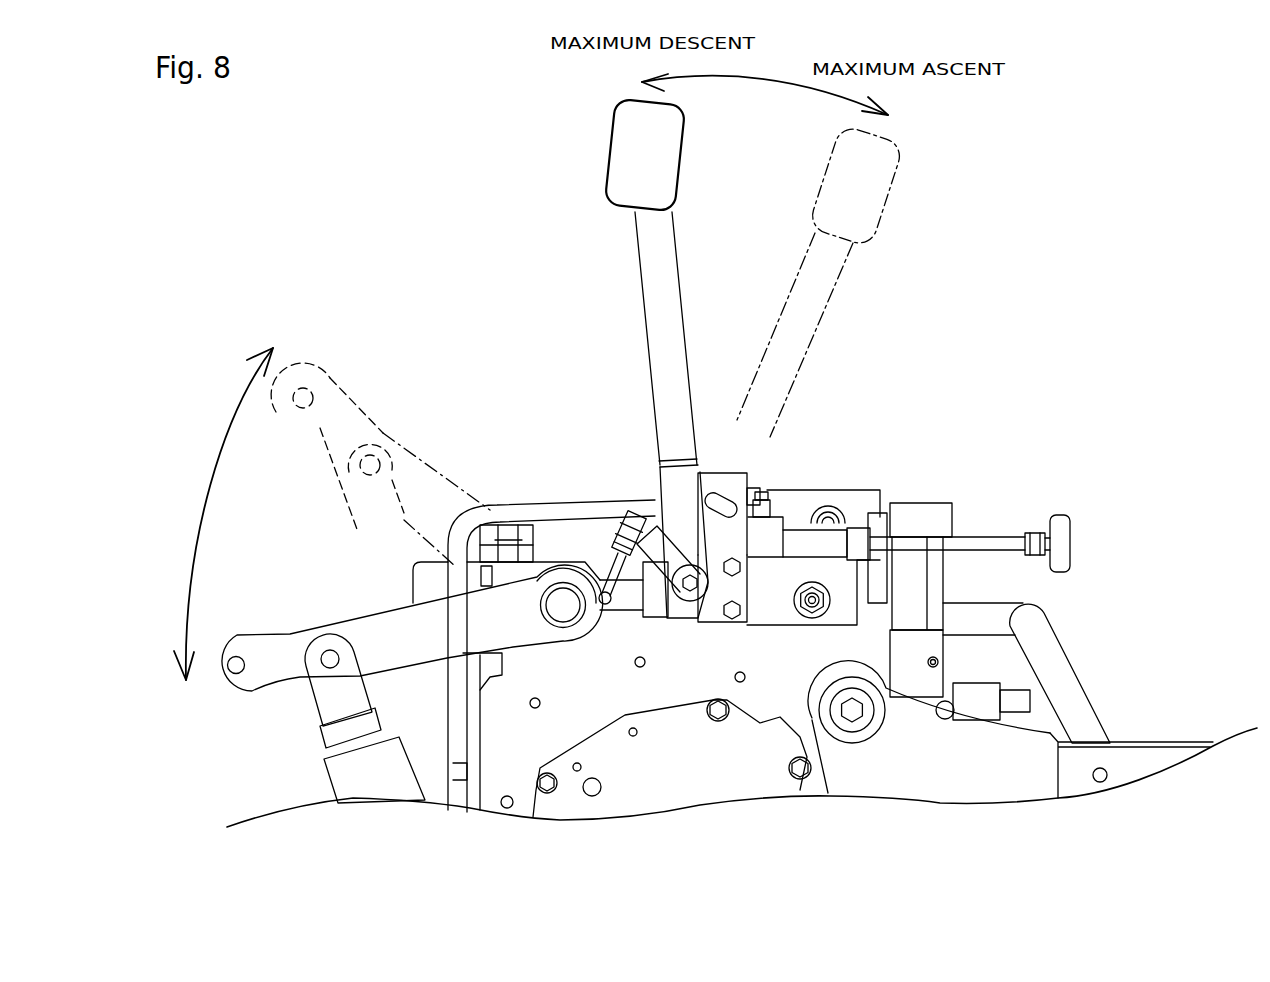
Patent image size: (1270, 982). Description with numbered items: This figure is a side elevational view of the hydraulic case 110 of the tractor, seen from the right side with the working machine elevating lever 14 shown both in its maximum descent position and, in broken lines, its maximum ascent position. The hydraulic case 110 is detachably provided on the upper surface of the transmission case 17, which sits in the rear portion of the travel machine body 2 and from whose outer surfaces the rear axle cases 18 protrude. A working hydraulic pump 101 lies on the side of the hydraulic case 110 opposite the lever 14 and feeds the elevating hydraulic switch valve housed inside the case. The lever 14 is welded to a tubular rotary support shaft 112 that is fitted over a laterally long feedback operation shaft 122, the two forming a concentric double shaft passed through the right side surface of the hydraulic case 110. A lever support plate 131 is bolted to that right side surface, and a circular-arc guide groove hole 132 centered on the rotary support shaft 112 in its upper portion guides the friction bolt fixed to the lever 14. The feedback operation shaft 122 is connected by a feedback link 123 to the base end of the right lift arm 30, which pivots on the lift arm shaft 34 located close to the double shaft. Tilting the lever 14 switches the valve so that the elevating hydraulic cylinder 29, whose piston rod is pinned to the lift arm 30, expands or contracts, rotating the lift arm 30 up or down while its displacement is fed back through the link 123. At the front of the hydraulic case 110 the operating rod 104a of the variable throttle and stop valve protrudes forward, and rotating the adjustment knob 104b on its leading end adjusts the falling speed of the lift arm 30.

The working machine elevating lever 14 is at (670, 338).
The feedback link 123 is at (614, 520).
The rotary support shaft 112 is at (692, 568).
The guide groove hole 132 is at (710, 500).
The lever support plate 131 is at (722, 588).
The working hydraulic pump 101 is at (828, 520).
The operating rod 104a is at (985, 540).
The adjustment knob 104b is at (1062, 530).
The lift arm 30 is at (392, 643).
The lift arm shaft 34 is at (563, 605).
The hydraulic case 110 is at (777, 600).
The feedback operation shaft 122 is at (677, 600).
The elevating hydraulic cylinder 29 is at (362, 783).
The transmission case 17 is at (580, 683).
The rear axle case 18 is at (677, 770).
The travel machine body 2 is at (1120, 772).